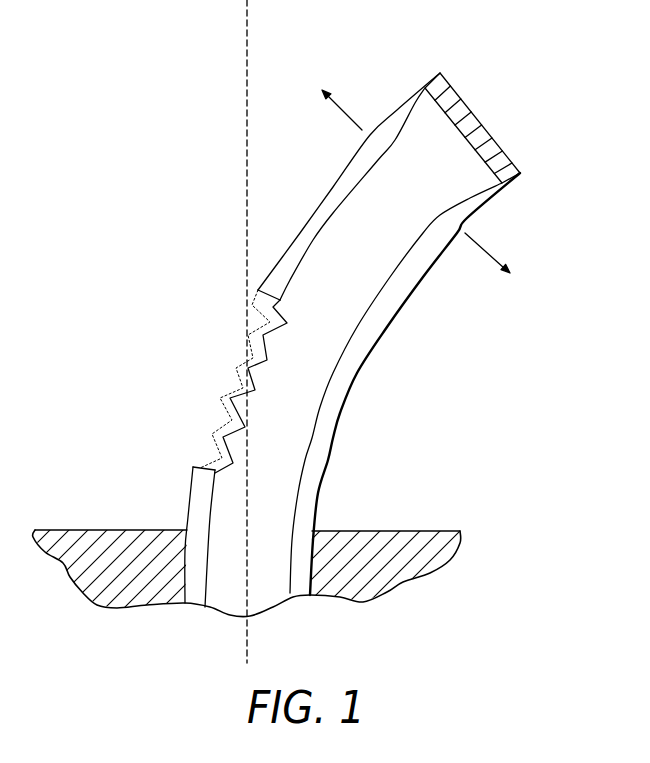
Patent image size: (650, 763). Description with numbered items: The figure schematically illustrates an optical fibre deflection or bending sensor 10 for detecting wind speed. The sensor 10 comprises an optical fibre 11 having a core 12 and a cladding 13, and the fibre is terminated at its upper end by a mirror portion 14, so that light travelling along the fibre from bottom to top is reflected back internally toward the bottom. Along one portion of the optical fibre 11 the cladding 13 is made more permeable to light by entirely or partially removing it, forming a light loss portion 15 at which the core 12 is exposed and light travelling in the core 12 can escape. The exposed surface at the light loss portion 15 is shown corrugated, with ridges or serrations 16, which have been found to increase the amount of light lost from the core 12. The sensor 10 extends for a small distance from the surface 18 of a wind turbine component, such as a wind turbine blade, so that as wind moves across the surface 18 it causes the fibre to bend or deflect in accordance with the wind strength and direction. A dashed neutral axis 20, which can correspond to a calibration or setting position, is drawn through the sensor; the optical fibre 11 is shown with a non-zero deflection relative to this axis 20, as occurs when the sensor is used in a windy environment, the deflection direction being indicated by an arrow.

The optical fibre deflection or bending sensor 10 is at (171, 157).
The optical fibre 11 is at (416, 117).
The core 12 is at (308, 407).
The cladding 13 is at (312, 492).
The mirror portion 14 is at (487, 121).
The light loss portion 15 is at (225, 395).
The ridges or serrations 16 is at (243, 427).
The surface 18 is at (98, 540).
The neutral axis 20 is at (240, 15).